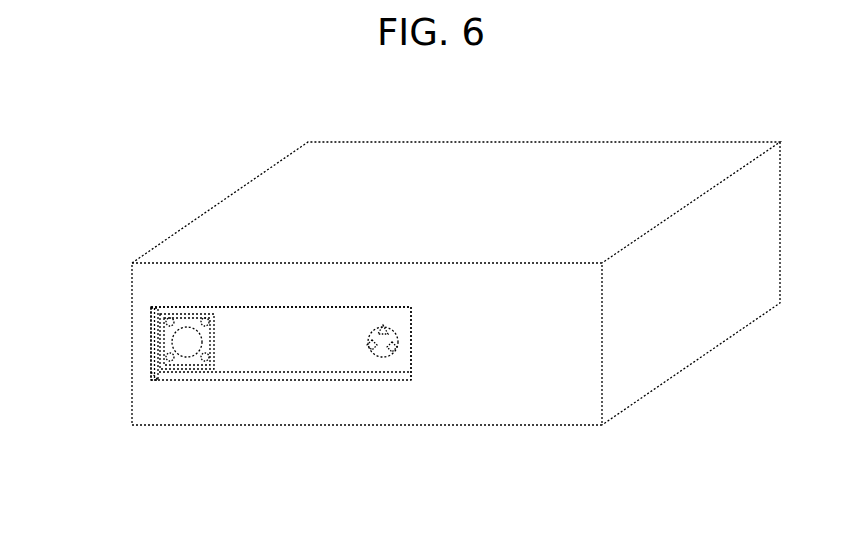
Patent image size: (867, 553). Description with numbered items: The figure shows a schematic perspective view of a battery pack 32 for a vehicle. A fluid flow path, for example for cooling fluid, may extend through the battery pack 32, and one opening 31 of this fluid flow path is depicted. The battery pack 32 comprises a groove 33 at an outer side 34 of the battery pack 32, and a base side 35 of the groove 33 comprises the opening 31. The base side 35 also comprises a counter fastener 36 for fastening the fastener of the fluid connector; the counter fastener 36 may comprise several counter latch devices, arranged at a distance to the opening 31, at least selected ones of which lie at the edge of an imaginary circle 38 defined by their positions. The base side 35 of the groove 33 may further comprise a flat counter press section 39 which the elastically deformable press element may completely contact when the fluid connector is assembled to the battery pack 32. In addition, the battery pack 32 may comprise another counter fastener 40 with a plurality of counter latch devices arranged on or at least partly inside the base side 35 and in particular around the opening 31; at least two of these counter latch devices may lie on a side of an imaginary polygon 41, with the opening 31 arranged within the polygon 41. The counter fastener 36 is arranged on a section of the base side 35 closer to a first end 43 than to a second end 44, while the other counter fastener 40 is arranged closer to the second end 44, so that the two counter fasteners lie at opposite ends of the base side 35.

The opening 31 is at (190, 342).
The battery pack 32 is at (234, 439).
The groove 33 is at (252, 320).
The outer side 34 is at (388, 405).
The base side 35 is at (281, 343).
The counter fastener 36 is at (365, 345).
The imaginary circle 38 is at (398, 350).
The flat counter press section 39 is at (342, 320).
The other counter fastener 40 is at (216, 358).
The imaginary polygon 41 is at (156, 343).
The first end 43 is at (411, 327).
The second end 44 is at (157, 380).